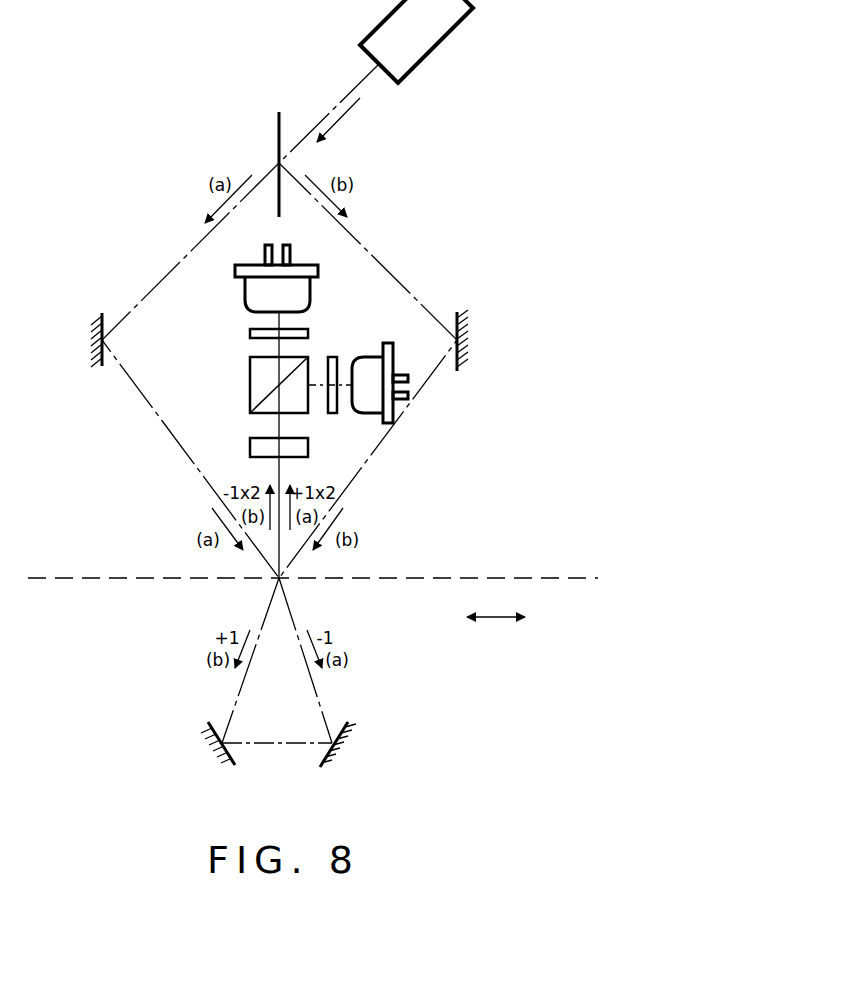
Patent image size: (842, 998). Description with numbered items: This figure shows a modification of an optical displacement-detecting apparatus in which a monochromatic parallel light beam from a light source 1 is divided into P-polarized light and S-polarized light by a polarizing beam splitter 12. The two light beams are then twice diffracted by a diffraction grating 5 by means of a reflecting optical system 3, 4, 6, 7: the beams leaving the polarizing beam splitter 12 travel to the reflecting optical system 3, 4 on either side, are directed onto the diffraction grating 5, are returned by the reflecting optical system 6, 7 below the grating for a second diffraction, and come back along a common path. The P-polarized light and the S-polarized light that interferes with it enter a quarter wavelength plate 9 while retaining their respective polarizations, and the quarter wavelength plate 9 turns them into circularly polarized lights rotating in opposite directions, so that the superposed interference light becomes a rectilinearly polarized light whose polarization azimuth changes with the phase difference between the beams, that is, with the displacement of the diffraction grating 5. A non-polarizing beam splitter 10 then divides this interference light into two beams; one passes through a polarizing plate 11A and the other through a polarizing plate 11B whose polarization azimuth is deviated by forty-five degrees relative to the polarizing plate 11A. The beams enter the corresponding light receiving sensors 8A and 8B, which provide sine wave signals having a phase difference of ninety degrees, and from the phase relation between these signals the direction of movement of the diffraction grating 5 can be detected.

The light source 1 is at (443, 43).
The polarizing beam splitter 12 is at (278, 128).
The reflecting optical system 3 is at (88, 338).
The reflecting optical system 4 is at (468, 343).
The light receiving sensor 8A is at (312, 298).
The light receiving sensor 8B is at (364, 357).
The polarizing plate 11A is at (250, 333).
The polarizing plate 11B is at (334, 416).
The non-polarizing beam splitter 10 is at (250, 385).
The quarter wavelength plate 9 is at (250, 447).
The diffraction grating 5 is at (552, 578).
The reflecting optical system 6 is at (208, 742).
The reflecting optical system 7 is at (350, 745).